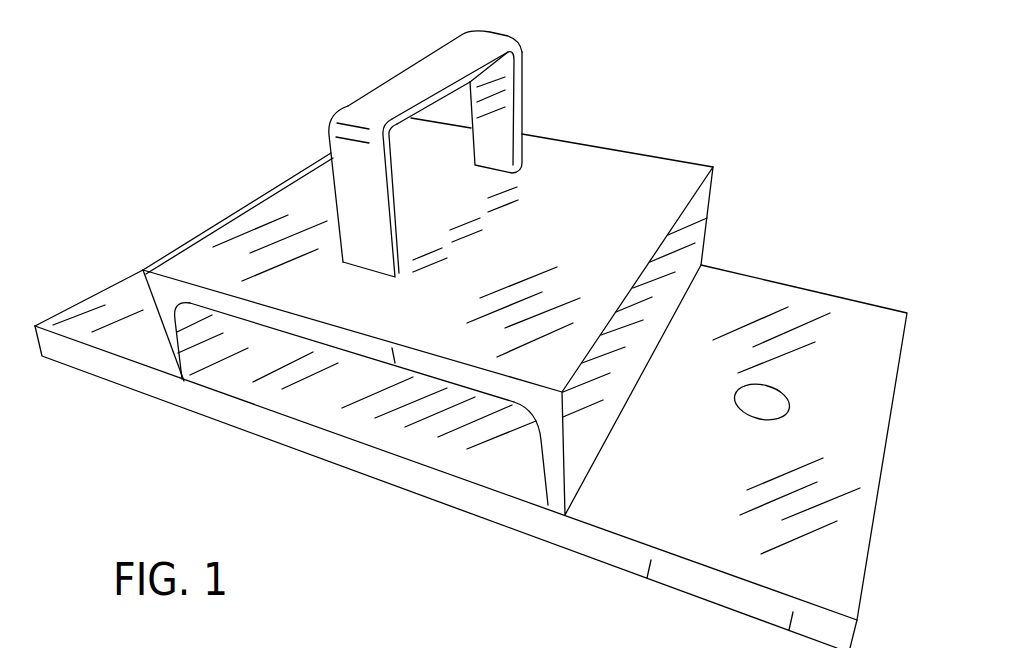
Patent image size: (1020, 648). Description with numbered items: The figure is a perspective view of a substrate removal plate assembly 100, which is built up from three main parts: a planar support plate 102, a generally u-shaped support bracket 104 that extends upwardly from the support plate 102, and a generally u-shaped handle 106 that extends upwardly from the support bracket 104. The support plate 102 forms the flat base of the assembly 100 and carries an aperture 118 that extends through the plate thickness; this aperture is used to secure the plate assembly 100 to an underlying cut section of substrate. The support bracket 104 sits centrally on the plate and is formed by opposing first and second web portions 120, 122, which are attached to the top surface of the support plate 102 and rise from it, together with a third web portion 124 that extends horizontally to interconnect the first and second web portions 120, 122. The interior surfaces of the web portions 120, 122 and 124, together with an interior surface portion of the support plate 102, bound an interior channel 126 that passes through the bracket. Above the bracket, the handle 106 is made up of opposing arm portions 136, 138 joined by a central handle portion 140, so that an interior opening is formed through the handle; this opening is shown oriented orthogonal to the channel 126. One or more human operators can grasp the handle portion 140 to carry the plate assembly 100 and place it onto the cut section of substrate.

The substrate removal plate assembly 100 is at (813, 100).
The planar support plate 102 is at (747, 304).
The support bracket 104 is at (627, 181).
The handle 106 is at (387, 88).
The aperture 118 is at (790, 408).
The first web portion 120 is at (147, 337).
The second web portion 122 is at (548, 477).
The third web portion 124 is at (347, 345).
The interior channel 126 is at (288, 350).
The arm portion 136 is at (358, 190).
The arm portion 138 is at (523, 113).
The central handle portion 140 is at (477, 50).